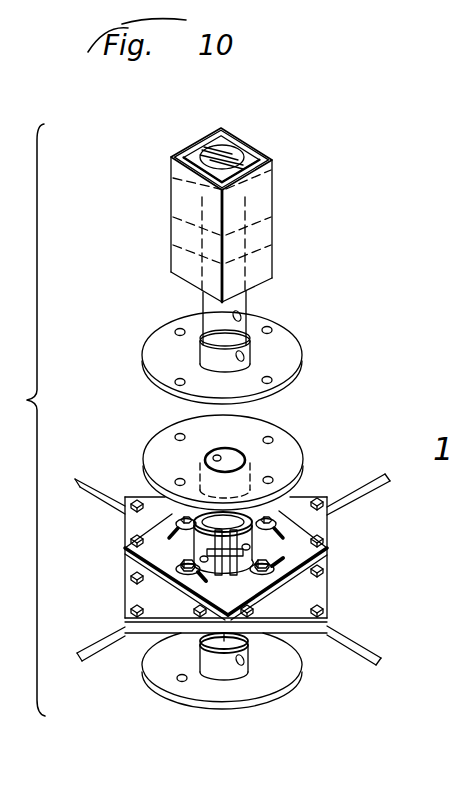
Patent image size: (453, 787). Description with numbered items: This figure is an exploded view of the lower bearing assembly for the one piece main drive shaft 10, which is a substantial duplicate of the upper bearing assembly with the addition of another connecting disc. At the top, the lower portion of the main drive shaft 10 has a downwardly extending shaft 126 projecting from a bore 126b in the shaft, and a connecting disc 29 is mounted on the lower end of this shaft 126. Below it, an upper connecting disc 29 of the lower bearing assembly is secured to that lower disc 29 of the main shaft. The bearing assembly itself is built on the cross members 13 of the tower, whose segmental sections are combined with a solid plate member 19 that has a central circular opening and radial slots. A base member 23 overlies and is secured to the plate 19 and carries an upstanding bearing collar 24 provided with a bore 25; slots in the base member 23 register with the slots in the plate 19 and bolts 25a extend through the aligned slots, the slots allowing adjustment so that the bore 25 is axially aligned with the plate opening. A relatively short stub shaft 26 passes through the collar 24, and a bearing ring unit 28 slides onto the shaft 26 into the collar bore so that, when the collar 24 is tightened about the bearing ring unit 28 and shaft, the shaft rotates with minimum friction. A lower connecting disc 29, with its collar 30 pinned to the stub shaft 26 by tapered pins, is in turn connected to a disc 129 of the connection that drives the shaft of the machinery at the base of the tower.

The main drive shaft 10 is at (265, 209).
The bore 126b is at (258, 148).
The downwardly extending shaft 126 is at (262, 300).
The connecting disc 29 is at (285, 347).
The bearing ring unit 28 is at (222, 522).
The bearing collar 24 is at (272, 540).
The bore 25 is at (186, 524).
The bolts 25a is at (184, 570).
The solid plate member 19 is at (310, 595).
The base member 23 is at (152, 565).
The cross members 13 is at (357, 648).
The disc 129 is at (152, 682).
The collar 30 is at (224, 666).
The stub shaft 26 is at (219, 641).